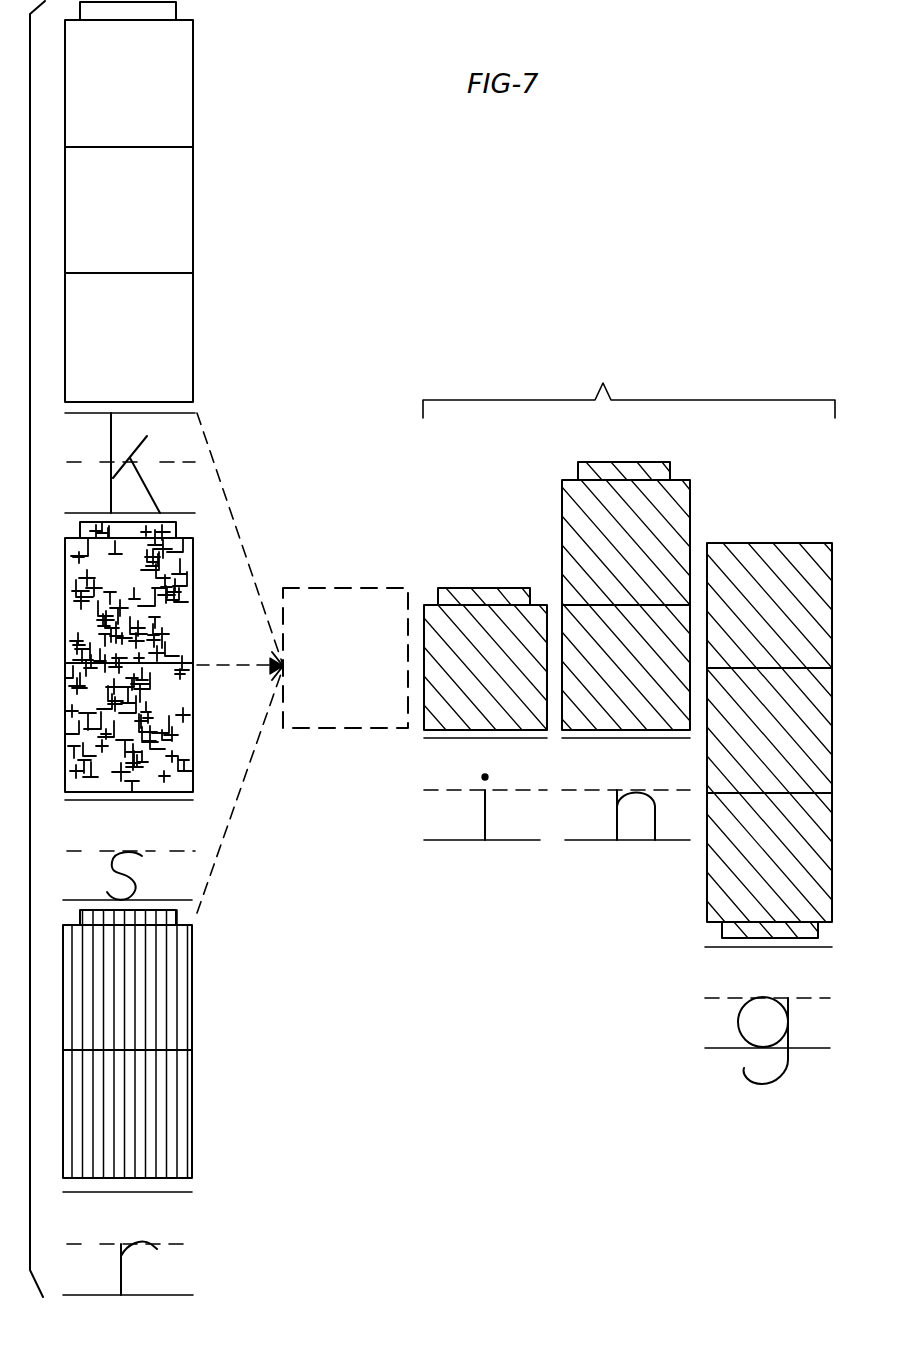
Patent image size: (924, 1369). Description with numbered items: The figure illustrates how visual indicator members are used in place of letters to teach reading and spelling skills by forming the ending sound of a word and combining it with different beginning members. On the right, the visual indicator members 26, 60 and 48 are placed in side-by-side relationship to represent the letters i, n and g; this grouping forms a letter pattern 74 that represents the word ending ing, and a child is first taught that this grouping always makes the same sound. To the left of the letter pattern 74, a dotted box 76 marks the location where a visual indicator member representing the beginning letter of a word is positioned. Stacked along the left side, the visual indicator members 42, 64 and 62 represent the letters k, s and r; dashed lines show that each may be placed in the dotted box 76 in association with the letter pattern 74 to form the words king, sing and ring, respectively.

The visual indicator member 42 is at (195, 20).
The visual indicator member 64 is at (195, 539).
The visual indicator member 62 is at (194, 932).
The dotted box 76 is at (350, 730).
The letter pattern 74 is at (629, 389).
The visual indicator member 26 is at (530, 590).
The visual indicator member 60 is at (672, 464).
The visual indicator member 48 is at (812, 543).